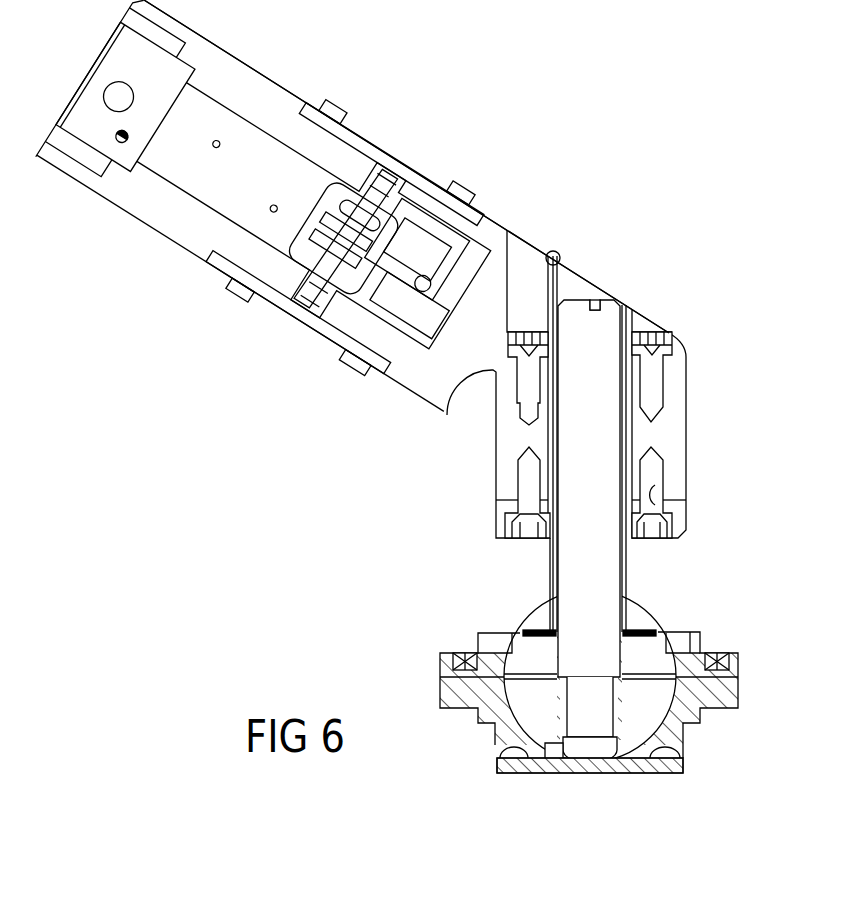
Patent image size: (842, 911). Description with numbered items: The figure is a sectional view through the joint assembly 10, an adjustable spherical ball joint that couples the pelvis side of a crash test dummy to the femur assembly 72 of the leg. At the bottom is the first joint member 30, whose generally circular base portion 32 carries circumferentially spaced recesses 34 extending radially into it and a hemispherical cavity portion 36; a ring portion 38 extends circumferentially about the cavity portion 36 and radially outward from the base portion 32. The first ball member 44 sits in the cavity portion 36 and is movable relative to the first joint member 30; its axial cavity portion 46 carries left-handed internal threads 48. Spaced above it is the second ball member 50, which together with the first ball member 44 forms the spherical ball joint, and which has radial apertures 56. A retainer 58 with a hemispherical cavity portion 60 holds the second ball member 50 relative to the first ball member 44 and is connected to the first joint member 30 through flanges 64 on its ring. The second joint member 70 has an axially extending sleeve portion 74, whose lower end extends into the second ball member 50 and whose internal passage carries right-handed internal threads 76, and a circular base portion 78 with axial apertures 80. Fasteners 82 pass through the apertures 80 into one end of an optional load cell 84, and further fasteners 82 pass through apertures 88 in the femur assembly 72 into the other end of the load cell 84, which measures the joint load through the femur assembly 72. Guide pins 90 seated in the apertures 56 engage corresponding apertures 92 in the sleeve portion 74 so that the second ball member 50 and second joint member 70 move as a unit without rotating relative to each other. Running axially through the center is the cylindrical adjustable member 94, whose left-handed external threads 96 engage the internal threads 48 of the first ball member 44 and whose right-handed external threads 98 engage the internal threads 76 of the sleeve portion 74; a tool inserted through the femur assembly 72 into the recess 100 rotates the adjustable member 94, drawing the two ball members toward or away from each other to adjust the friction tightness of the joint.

The joint assembly 10 is at (434, 519).
The first joint member 30 is at (700, 716).
The base portion 32 is at (640, 766).
The recesses 34 is at (500, 760).
The cavity portion 36 is at (552, 762).
The ring portion 38 is at (733, 687).
The first ball member 44 is at (515, 705).
The cavity portion 46 is at (575, 762).
The internal threads 48 is at (540, 737).
The second ball member 50 is at (547, 602).
The apertures 56 is at (515, 633).
The retainer 58 is at (700, 648).
The cavity portion 60 is at (668, 633).
The flanges 64 is at (738, 665).
The second joint member 70 is at (686, 512).
The femur assembly 72 is at (258, 62).
The sleeve portion 74 is at (553, 553).
The internal threads 76 is at (558, 608).
The base portion 78 is at (497, 513).
The apertures 80 is at (655, 498).
The fasteners 82 is at (528, 332).
The load cell 84 is at (680, 410).
The apertures 88 is at (556, 256).
The guide pins 90 is at (540, 630).
The apertures 92 is at (633, 612).
The adjustable member 94 is at (598, 338).
The first plurality of external threads 96 is at (683, 740).
The second plurality of external threads 98 is at (558, 572).
The recess 100 is at (595, 300).